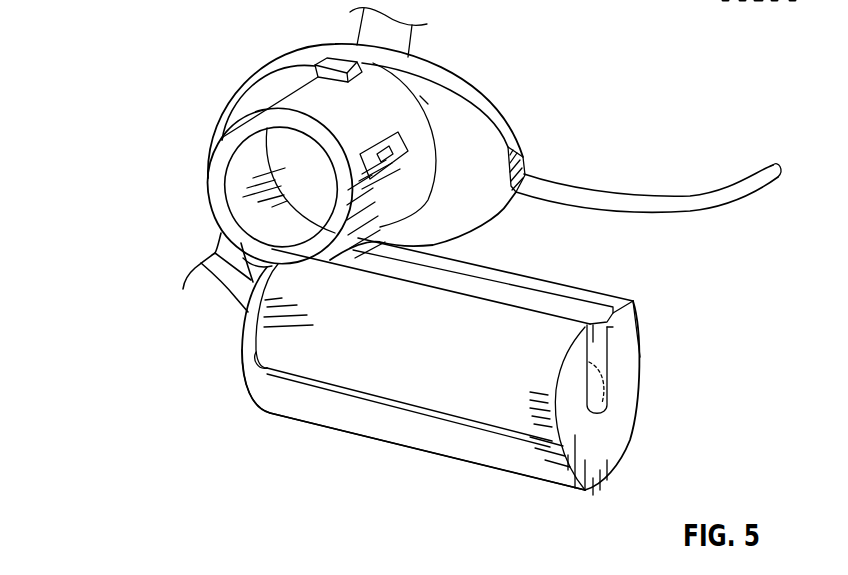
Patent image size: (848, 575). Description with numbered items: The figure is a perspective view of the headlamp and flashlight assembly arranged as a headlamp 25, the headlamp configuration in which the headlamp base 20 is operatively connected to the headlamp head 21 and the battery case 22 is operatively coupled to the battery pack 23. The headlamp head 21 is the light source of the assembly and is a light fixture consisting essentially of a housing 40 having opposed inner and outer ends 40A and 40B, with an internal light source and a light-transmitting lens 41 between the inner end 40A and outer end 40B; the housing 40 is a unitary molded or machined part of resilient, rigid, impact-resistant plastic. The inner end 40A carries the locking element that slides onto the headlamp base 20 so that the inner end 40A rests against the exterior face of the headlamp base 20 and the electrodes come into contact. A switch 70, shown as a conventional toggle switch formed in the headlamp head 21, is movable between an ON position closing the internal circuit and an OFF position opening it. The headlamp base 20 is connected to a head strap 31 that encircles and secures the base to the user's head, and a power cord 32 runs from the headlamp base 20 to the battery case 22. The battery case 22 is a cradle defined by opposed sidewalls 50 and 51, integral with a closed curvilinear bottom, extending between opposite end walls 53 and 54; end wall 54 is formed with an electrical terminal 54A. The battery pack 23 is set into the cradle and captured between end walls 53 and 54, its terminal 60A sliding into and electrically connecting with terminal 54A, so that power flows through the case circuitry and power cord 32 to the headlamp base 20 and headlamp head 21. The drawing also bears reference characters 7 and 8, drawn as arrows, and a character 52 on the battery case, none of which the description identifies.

The direction arrow 7 is at (316, 100).
The direction arrow 8 is at (487, 402).
The headlamp base 20 is at (483, 96).
The headlamp head 21 is at (210, 193).
The battery case 22 is at (643, 358).
The battery pack 23 is at (560, 315).
The headlamp 25 is at (104, 241).
The head strap 31 is at (372, 36).
The power cord 32 is at (622, 203).
The housing 40 is at (279, 102).
The inner end 40A is at (425, 102).
The outer end 40B is at (223, 137).
The light-transmitting lens 41 is at (287, 180).
The sidewall 50 is at (500, 293).
The sidewall 51 is at (333, 407).
The outer bottom edge 52 is at (393, 443).
The end wall 53 is at (256, 380).
The end wall 54 is at (599, 470).
The electrical terminal 54A is at (600, 348).
The terminal 60A is at (593, 397).
The switch 70 is at (392, 158).